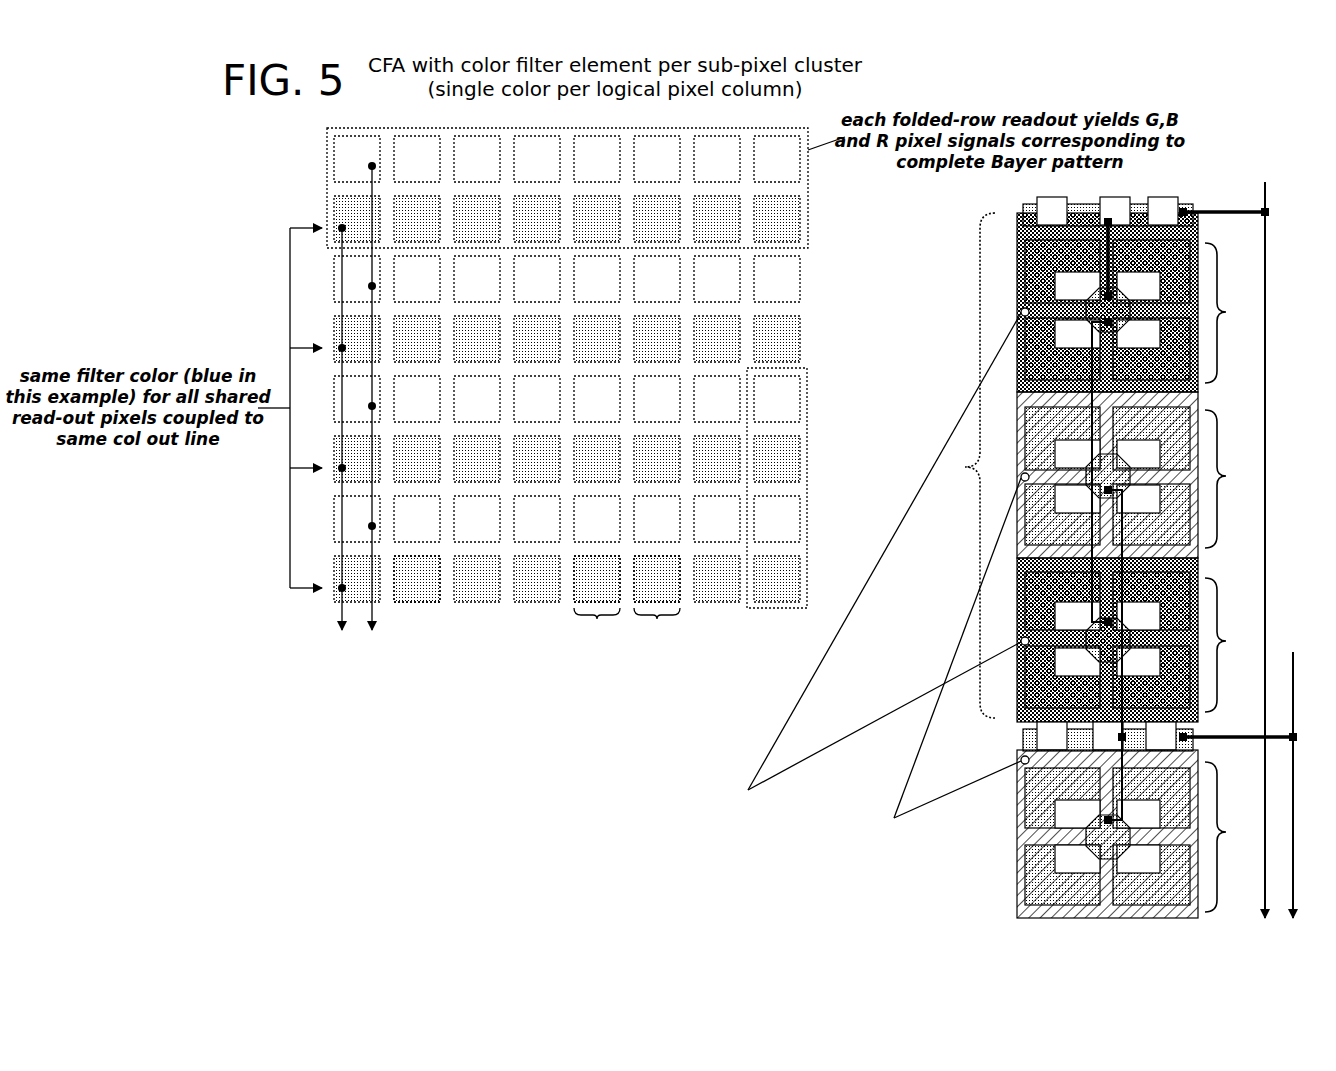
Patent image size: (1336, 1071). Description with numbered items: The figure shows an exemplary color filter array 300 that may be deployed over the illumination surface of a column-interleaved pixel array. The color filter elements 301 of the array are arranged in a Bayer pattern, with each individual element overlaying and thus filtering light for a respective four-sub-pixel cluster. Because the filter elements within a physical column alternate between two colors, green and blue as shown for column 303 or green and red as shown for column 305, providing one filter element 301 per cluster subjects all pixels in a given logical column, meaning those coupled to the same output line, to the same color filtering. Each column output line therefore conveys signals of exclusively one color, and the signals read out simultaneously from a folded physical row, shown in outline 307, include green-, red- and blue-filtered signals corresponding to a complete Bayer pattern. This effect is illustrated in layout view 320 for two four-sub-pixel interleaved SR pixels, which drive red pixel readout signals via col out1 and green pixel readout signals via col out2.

The color filter array 300 is at (282, 184).
The color filter element 301 is at (428, 604).
The column 303 is at (597, 602).
The column 305 is at (657, 602).
The outline 307 is at (808, 212).
The layout view 320 is at (965, 467).